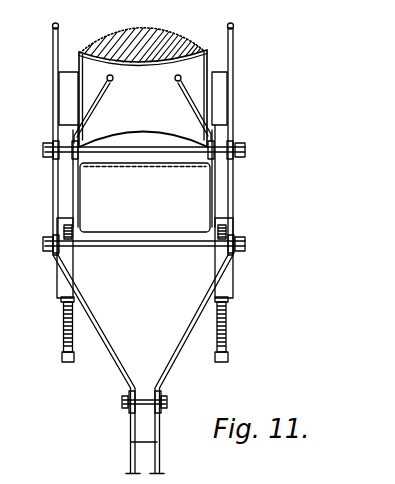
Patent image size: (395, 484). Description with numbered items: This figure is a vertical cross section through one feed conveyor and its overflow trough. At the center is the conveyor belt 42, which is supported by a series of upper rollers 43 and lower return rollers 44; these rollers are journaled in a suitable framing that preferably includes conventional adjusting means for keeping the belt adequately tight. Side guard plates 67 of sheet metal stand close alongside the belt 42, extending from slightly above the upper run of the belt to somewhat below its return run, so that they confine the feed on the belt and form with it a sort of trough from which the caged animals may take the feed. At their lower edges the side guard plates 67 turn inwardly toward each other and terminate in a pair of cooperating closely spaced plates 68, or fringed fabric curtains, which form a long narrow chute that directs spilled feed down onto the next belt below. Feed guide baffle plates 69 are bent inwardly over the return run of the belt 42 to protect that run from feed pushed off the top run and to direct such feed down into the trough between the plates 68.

The conveyor belt 42 is at (196, 51).
The upper rollers 43 is at (194, 69).
The lower return rollers 44 is at (192, 202).
The side guard plates 67 is at (54, 79).
The closely spaced plates 68 is at (131, 442).
The feed guide baffle plates 69 is at (89, 116).